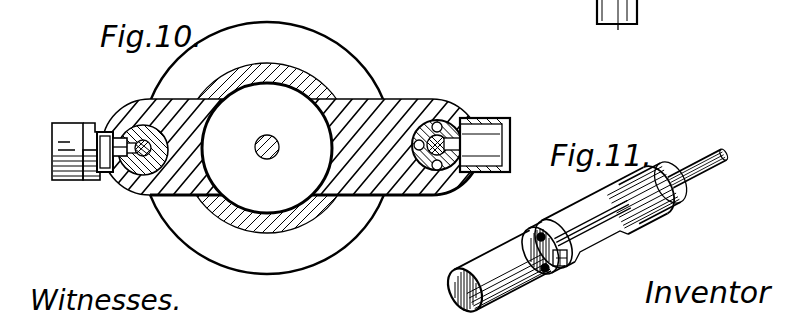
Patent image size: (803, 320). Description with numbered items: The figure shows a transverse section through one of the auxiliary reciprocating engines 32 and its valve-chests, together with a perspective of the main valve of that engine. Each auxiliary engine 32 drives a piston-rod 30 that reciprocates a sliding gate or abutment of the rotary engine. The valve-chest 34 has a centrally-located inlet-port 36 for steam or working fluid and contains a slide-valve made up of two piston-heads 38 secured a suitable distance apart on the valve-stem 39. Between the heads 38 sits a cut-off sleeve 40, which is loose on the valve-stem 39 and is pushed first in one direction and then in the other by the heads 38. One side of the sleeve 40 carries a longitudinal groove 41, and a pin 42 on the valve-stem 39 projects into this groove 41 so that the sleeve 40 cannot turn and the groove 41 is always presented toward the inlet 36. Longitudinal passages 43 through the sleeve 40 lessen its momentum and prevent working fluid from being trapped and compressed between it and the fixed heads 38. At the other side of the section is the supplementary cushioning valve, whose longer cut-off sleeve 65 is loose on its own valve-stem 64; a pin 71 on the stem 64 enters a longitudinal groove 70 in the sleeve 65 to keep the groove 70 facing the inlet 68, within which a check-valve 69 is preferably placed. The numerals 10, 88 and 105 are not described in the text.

In FIG. 10, the frame 10 is at (618, 32).
In FIG. 10, the piston-rod 30 is at (266, 155).
In FIG. 10, the auxiliary reciprocating engine 32 is at (267, 160).
In FIG. 10, the valve-chest 34 is at (445, 103).
In FIG. 10, the inlet-port 36 is at (510, 143).
In FIG. 11, the piston-heads 38 is at (650, 230).
In FIG. 10, the valve-stem 39 is at (452, 170).
In FIG. 11, the valve-stem 39 is at (703, 173).
In FIG. 10, the cut-off sleeve 40 is at (418, 190).
In FIG. 11, the cut-off sleeve 40 is at (600, 220).
In FIG. 10, the longitudinal groove 41 is at (481, 144).
In FIG. 11, the longitudinal groove 41 is at (566, 262).
In FIG. 10, the pin 42 is at (458, 133).
In FIG. 11, the pin 42 is at (597, 247).
In FIG. 10, the longitudinal passages 43 is at (437, 172).
In FIG. 11, the longitudinal passages 43 is at (542, 276).
In FIG. 10, the valve-stem 64 is at (143, 157).
In FIG. 10, the cut-off sleeve 65 is at (143, 140).
In FIG. 10, the inlet 68 is at (53, 143).
In FIG. 10, the check-valve 69 is at (97, 178).
In FIG. 10, the longitudinal groove 70 is at (110, 174).
In FIG. 10, the pin 71 is at (118, 132).
In FIG. 10, the bracket 88 is at (632, 12).
In FIG. 10, the lever 105 is at (69, 6).